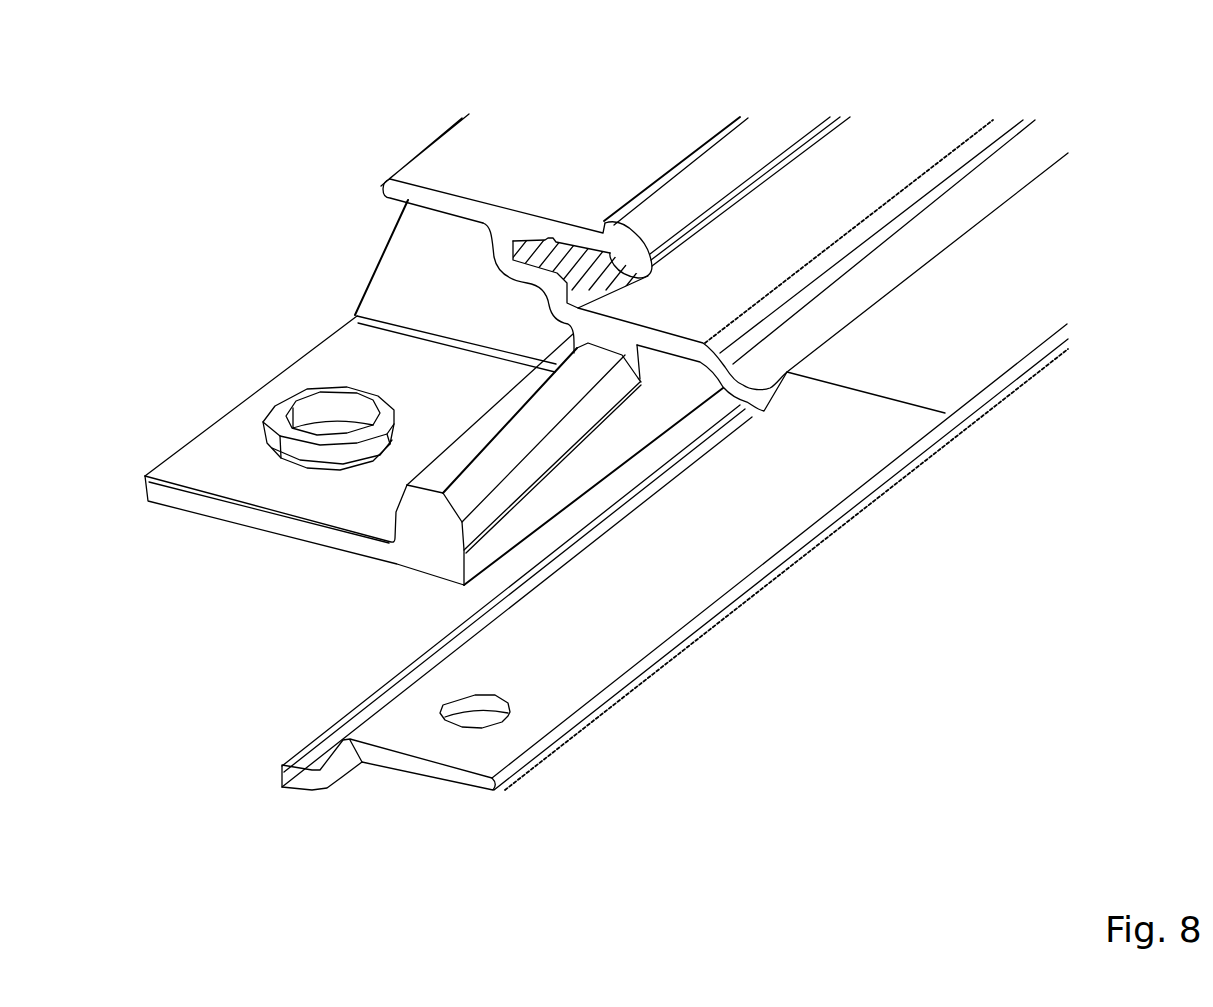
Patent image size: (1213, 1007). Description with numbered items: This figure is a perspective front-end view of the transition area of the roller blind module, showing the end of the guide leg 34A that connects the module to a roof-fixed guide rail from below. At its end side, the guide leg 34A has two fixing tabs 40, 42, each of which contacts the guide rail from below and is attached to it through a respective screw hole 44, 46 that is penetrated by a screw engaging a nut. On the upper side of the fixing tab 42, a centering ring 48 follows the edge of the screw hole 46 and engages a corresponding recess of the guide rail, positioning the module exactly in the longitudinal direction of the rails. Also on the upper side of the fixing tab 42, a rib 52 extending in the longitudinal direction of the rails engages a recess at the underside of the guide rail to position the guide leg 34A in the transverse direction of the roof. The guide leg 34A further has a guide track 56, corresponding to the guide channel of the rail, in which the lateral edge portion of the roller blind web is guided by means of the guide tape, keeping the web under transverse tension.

The guide leg 34A is at (448, 150).
The guide track 56 is at (563, 258).
The fixing tab 42 is at (335, 367).
The screw hole 46 is at (312, 414).
The centering ring 48 is at (302, 460).
The rib 52 is at (427, 484).
The fixing tab 40 is at (690, 567).
The screw hole 44 is at (475, 720).